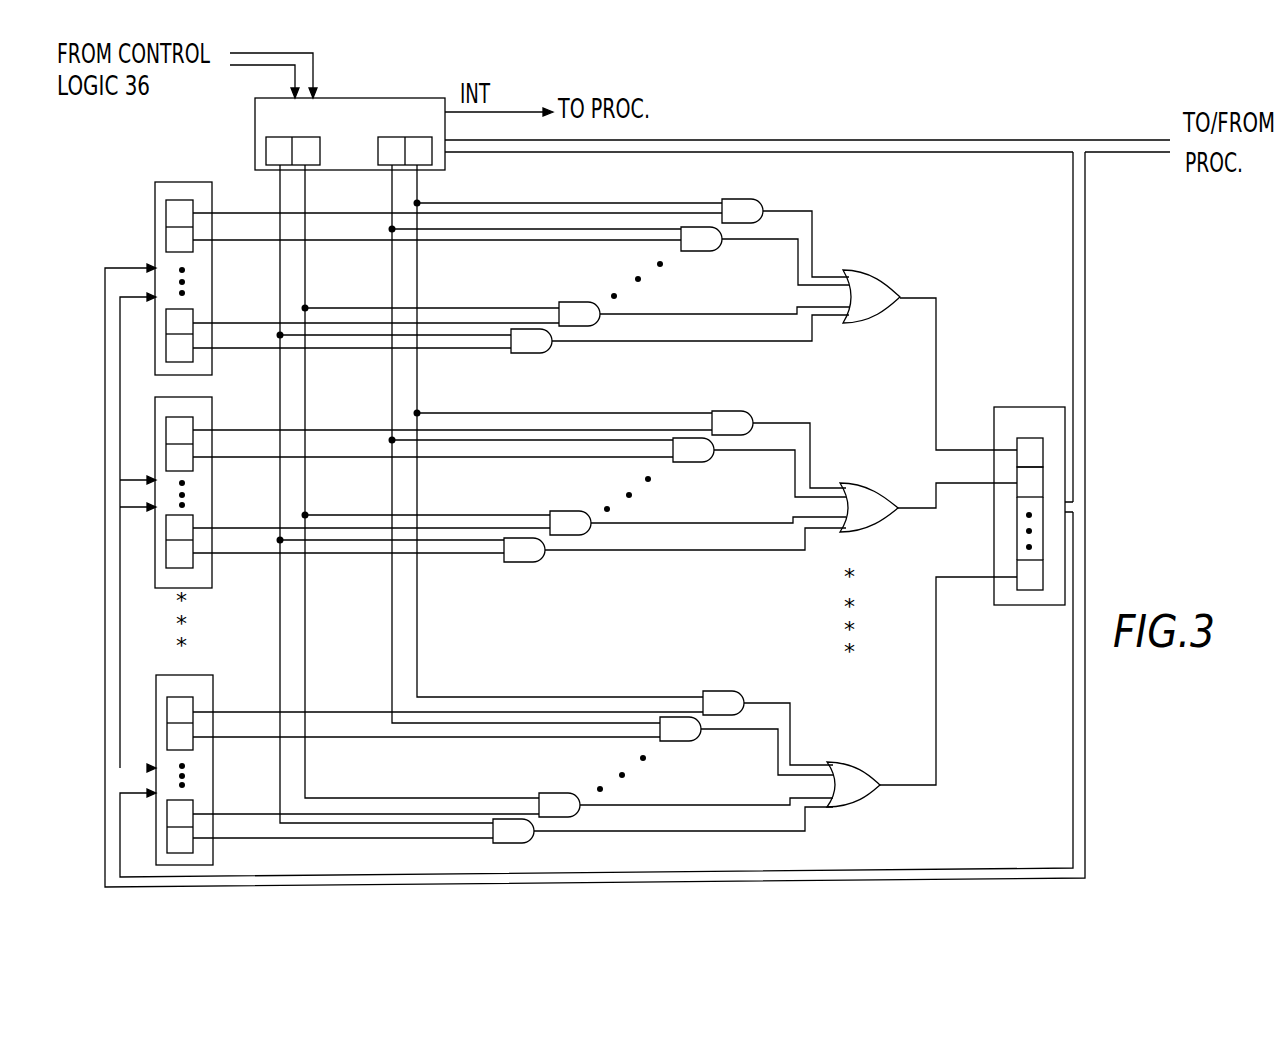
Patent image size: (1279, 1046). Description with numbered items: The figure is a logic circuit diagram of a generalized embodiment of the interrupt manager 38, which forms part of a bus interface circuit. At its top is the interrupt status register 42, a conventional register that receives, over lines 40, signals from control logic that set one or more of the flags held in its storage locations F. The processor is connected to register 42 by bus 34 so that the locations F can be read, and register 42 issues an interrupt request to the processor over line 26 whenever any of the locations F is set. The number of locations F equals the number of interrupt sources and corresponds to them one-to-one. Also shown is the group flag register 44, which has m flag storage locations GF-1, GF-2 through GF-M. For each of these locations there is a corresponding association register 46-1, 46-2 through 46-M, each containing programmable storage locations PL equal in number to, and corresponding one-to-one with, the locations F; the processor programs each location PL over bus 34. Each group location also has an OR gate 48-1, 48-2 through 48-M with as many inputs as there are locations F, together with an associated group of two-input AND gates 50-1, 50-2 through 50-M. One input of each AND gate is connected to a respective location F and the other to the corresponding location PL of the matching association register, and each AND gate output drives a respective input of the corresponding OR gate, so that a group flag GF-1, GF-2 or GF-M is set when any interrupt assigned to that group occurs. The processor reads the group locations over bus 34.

The line 26 is at (535, 112).
The bus 34 is at (1138, 140).
The interrupt manager 38 is at (840, 102).
The lines 40 is at (287, 53).
The interrupt status register 42 is at (255, 108).
The storage locations F is at (246, 150).
The group flag register 44 is at (1068, 508).
The association register 46-1 is at (155, 213).
The association register 46-2 is at (213, 568).
The association register 46-M is at (213, 853).
The programmable storage locations PL is at (206, 183).
The OR gate 48-1 is at (887, 280).
The OR gate 48-2 is at (876, 469).
The OR gate 48-M is at (855, 765).
The group of AND gates 50-1 is at (766, 188).
The group of AND gates 50-2 is at (752, 397).
The group of AND gates 50-M is at (731, 676).
The flag storage location GF-1 is at (1043, 457).
The flag storage location GF-2 is at (1043, 487).
The flag storage location GF-M is at (1022, 598).